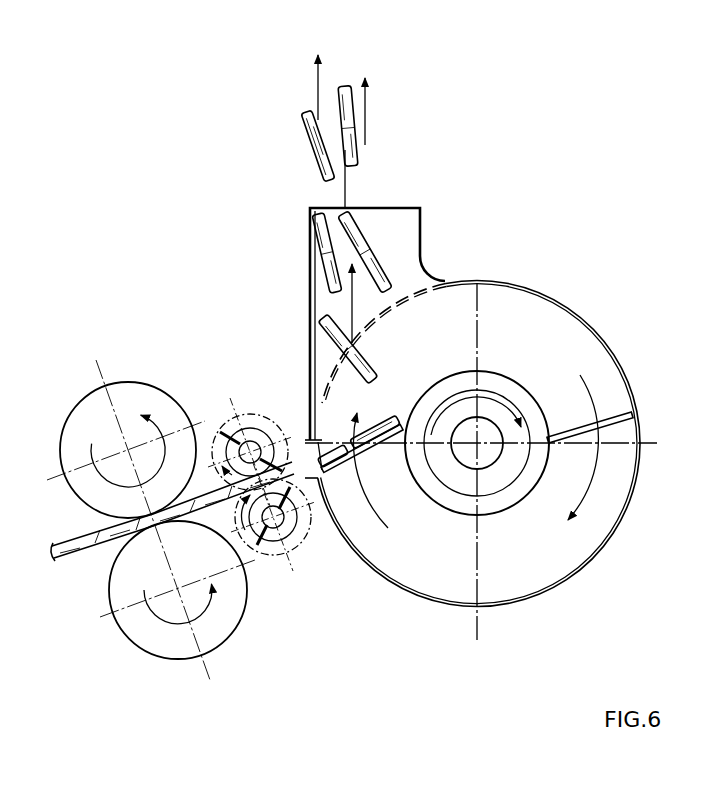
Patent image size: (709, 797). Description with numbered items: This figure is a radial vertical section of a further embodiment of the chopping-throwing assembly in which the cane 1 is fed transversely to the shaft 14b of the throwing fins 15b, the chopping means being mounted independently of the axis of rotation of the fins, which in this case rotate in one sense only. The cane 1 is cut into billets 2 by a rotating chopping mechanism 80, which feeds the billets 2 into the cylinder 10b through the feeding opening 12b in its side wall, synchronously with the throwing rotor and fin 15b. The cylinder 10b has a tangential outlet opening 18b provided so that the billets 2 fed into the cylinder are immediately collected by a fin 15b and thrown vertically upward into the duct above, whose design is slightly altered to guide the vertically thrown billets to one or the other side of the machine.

The cane 1 is at (83, 557).
The billets 2 is at (313, 134).
The cylinder 10b is at (577, 572).
The feeding opening 12b is at (308, 452).
The shaft of the throwing fins 14b is at (488, 436).
The throwing fins 15b is at (616, 412).
The tangential outlet opening 18b is at (380, 207).
The rotating chopping mechanism 80 is at (257, 440).